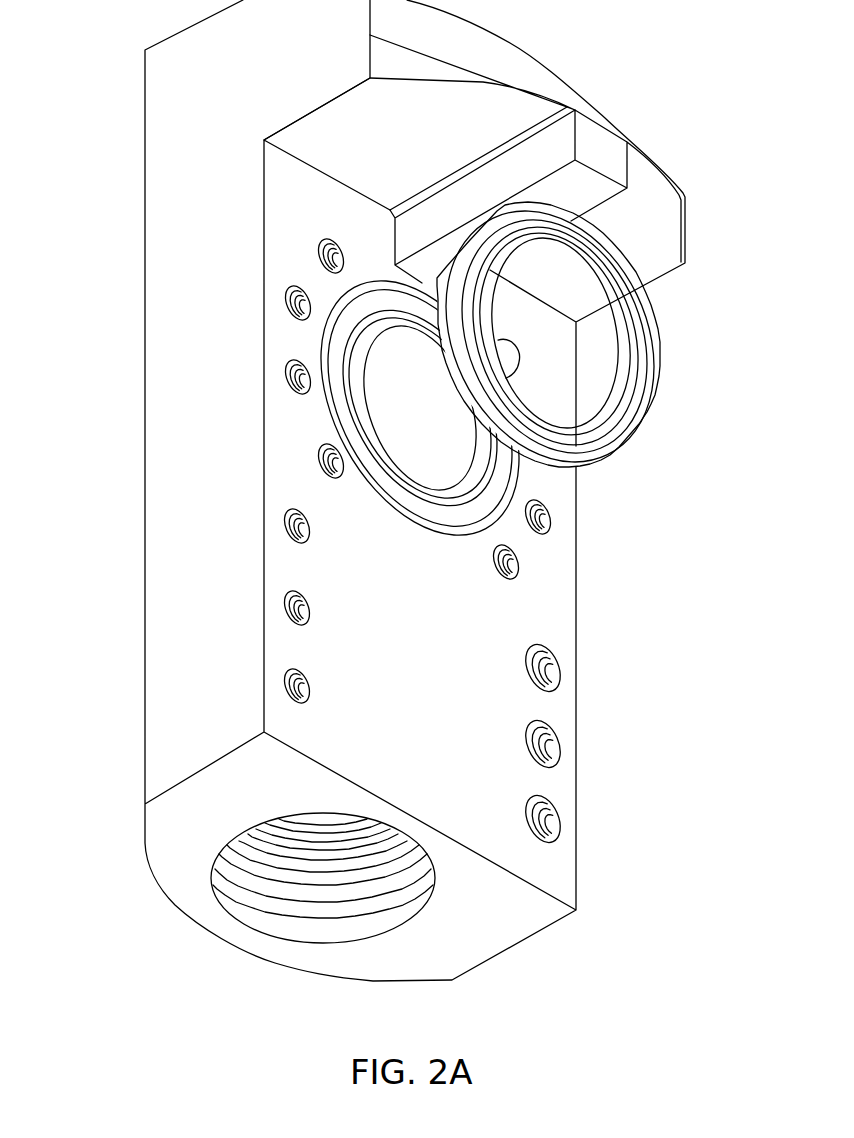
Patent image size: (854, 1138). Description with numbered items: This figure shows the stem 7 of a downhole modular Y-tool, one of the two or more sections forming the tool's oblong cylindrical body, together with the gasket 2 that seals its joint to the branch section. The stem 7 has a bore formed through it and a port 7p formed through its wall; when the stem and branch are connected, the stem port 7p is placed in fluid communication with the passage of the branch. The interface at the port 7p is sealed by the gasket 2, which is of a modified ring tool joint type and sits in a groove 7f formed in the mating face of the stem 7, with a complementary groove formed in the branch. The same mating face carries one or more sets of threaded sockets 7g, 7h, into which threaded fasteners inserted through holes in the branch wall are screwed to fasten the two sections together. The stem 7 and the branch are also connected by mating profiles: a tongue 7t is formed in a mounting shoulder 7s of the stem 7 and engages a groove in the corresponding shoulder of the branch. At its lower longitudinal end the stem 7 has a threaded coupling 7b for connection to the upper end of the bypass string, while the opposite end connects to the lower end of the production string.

The stem 7 is at (145, 397).
The mounting shoulder 7s is at (410, 155).
The tongue 7t is at (593, 152).
The port 7p is at (421, 421).
The groove 7f is at (490, 520).
The gasket 2 is at (613, 457).
The threaded socket 7g is at (550, 522).
The threaded socket 7h is at (562, 748).
The threaded coupling 7b is at (287, 917).